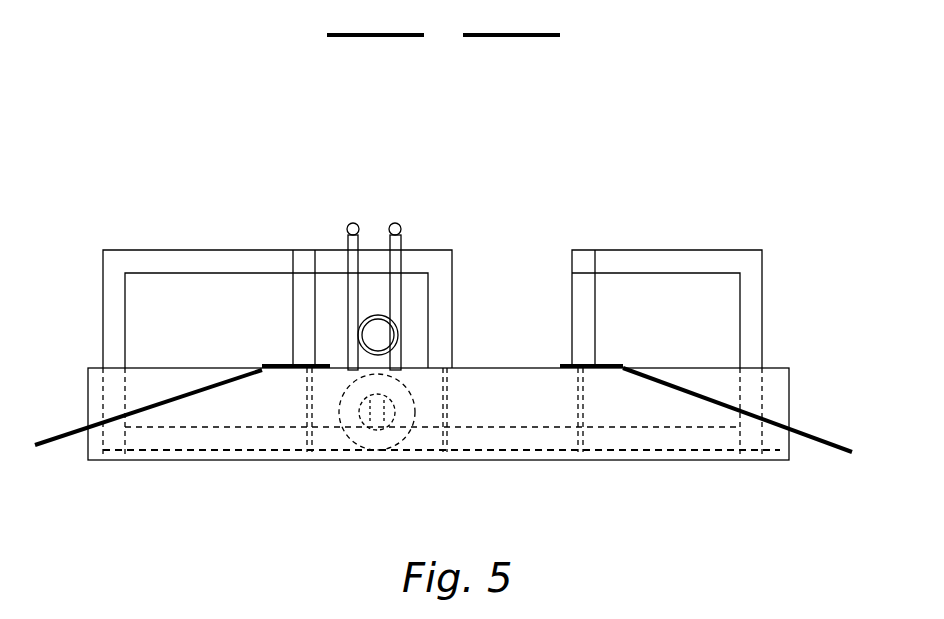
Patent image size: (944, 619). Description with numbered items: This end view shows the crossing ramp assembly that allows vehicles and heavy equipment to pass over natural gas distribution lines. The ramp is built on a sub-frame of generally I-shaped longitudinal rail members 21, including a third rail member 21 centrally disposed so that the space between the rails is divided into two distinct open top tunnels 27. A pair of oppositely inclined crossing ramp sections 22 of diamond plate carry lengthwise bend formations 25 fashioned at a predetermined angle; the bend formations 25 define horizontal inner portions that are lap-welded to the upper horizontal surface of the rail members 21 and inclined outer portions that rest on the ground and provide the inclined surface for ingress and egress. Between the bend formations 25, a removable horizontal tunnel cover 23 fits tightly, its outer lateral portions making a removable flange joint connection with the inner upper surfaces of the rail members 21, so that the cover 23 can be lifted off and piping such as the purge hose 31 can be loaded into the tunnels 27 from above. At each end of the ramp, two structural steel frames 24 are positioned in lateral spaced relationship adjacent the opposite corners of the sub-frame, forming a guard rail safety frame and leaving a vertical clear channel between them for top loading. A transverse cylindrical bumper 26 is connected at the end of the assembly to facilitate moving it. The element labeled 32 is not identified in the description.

The I-beam rail member 21 is at (300, 410).
The inclined crossing ramp section 22 is at (70, 428).
The tunnel cover 23 is at (388, 38).
The structural steel frame 24 is at (205, 255).
The bend formation 25 is at (268, 360).
The transverse cylindrical bumper 26 is at (790, 385).
The open top tunnel 27 is at (522, 367).
The purge hose 31 is at (349, 226).
The second terminal pin 32 is at (404, 226).